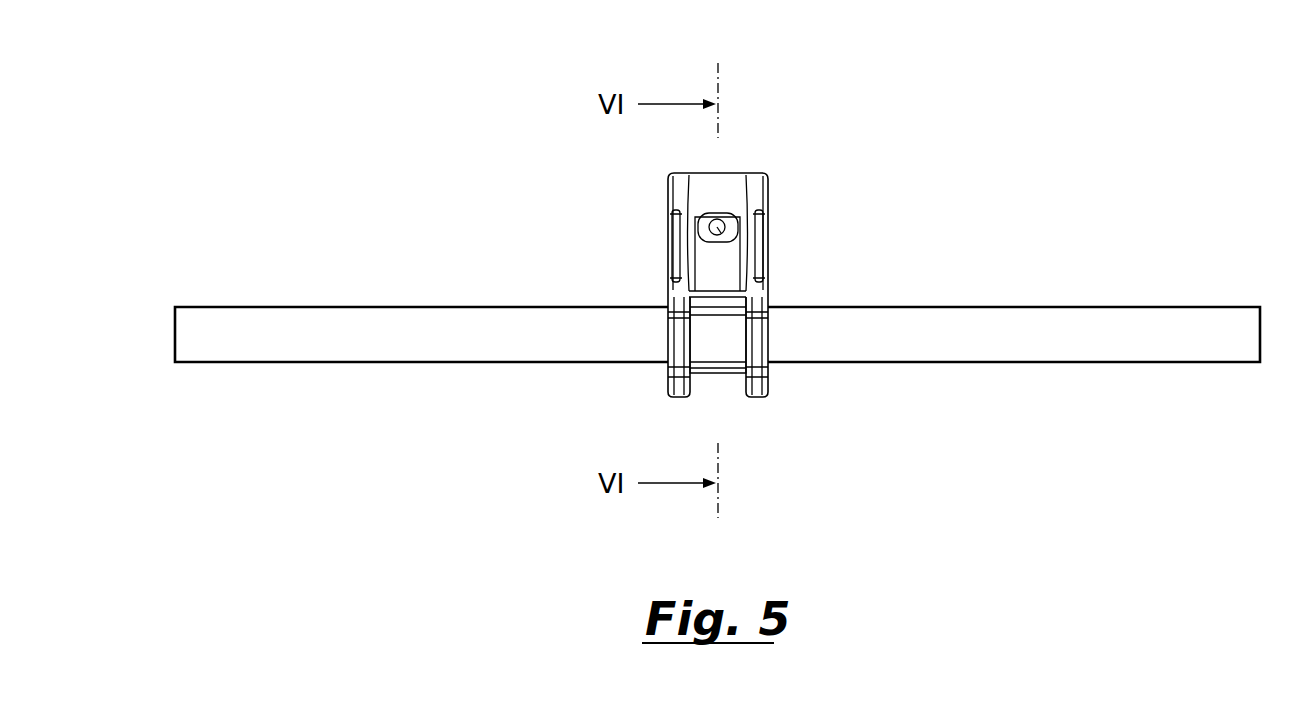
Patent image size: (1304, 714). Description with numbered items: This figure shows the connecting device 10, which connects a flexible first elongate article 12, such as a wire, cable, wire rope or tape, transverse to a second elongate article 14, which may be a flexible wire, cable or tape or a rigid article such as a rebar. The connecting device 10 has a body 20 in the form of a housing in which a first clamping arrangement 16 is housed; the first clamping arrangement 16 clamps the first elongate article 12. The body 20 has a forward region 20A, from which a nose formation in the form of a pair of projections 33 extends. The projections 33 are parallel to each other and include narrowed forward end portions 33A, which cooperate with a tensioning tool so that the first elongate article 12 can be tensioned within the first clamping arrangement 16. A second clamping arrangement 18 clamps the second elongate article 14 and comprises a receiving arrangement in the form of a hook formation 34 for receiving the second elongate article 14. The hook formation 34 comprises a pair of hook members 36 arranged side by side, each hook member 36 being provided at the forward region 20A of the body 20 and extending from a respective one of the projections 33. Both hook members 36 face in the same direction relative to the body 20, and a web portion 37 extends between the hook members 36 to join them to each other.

The connecting device 10 is at (720, 266).
The first elongate article 12 is at (760, 238).
The second elongate article 14 is at (1100, 317).
The first clamping arrangement 16 is at (752, 192).
The second clamping arrangement 18 is at (780, 405).
The body 20 is at (628, 212).
The forward region 20A is at (708, 186).
The projections 33 is at (668, 246).
The narrowed forward end portions 33A is at (676, 272).
The hook formation 34 is at (655, 382).
The hook members 36 is at (680, 342).
The web portion 37 is at (713, 343).